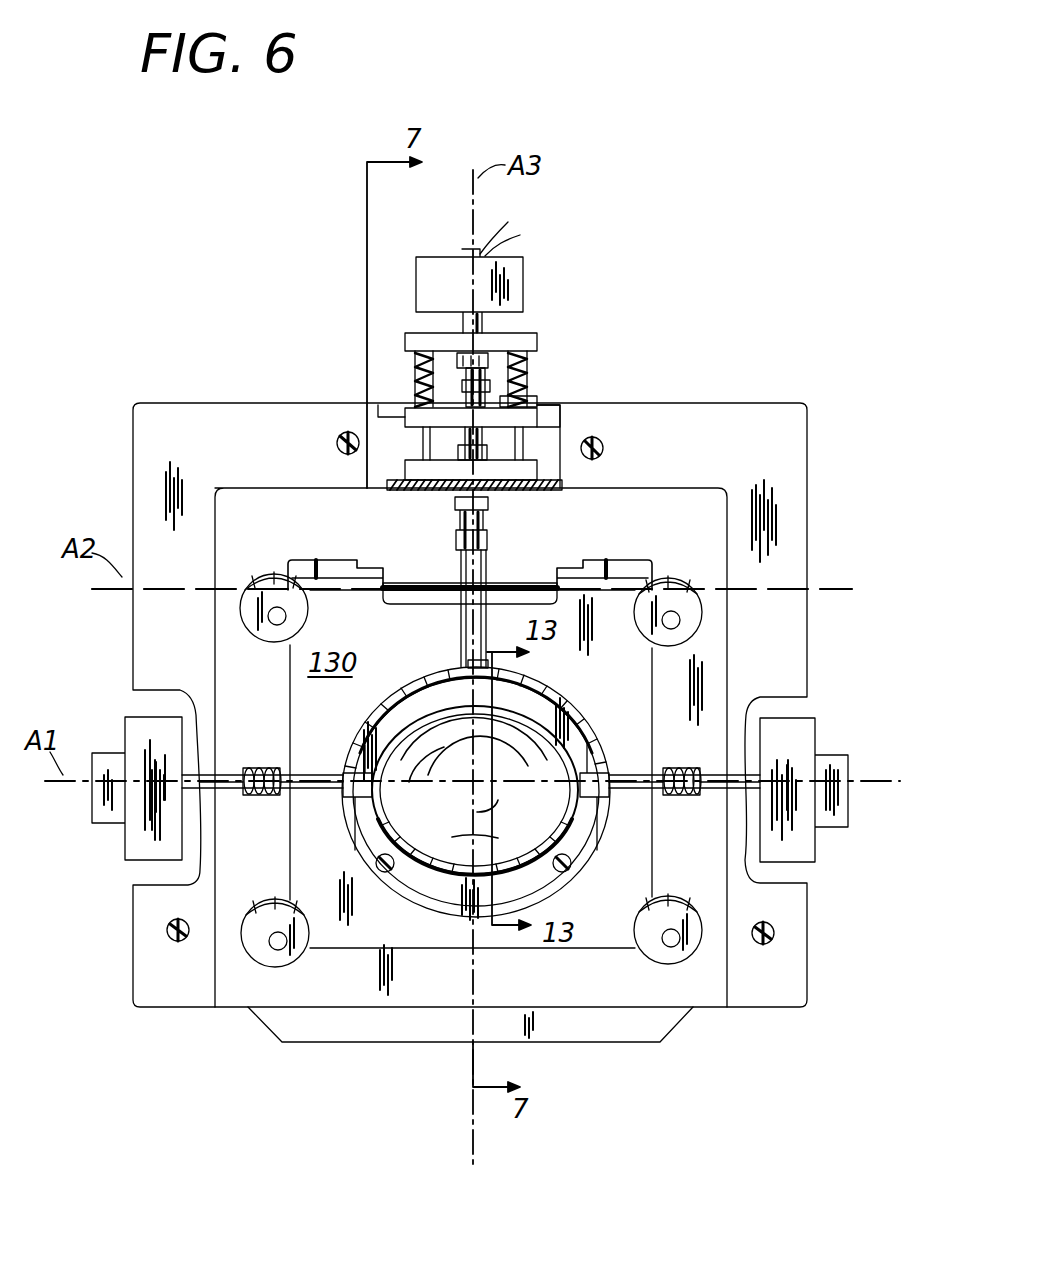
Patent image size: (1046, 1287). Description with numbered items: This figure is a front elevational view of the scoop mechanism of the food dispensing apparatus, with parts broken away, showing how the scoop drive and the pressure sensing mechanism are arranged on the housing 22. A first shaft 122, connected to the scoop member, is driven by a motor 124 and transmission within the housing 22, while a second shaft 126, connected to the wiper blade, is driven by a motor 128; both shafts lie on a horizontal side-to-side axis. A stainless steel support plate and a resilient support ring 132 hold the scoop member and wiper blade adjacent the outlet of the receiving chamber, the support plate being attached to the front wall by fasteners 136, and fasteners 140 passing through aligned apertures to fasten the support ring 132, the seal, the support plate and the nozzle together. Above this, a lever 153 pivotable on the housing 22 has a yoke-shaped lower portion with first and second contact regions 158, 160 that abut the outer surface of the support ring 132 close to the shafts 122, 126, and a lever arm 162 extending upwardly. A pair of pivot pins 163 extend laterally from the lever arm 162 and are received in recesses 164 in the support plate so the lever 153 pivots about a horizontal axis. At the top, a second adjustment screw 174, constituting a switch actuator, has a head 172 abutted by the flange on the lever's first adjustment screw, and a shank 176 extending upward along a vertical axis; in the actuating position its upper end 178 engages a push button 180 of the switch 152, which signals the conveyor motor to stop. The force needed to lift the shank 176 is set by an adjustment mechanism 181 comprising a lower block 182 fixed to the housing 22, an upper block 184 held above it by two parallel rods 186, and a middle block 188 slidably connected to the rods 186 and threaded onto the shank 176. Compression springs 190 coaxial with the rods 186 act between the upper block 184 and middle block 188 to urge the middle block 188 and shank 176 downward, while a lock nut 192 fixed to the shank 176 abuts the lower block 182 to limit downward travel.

The housing 22 is at (133, 460).
The first shaft 122 is at (330, 775).
The motor 124 is at (108, 753).
The second shaft 126 is at (640, 770).
The motor 128 is at (808, 718).
The support ring 132 is at (458, 900).
The fasteners 136 is at (275, 578).
The fasteners 140 is at (387, 875).
The switch 152 is at (440, 272).
The lever 153 is at (545, 712).
The first contact region 158 is at (355, 797).
The second contact region 160 is at (597, 797).
The lever arm 162 is at (461, 640).
The pivot pins 163 is at (405, 585).
The recesses 164 is at (362, 565).
The head 172 is at (490, 520).
The second adjustment screw 174 is at (530, 402).
The shank 176 is at (462, 398).
The upper end 178 is at (457, 358).
The push button 180 is at (517, 333).
The adjustment mechanism 181 is at (548, 405).
The lower block 182 is at (537, 472).
The upper block 184 is at (540, 345).
The rods 186 is at (423, 445).
The middle block 188 is at (405, 417).
The compression springs 190 is at (422, 372).
The lock nut 192 is at (400, 490).